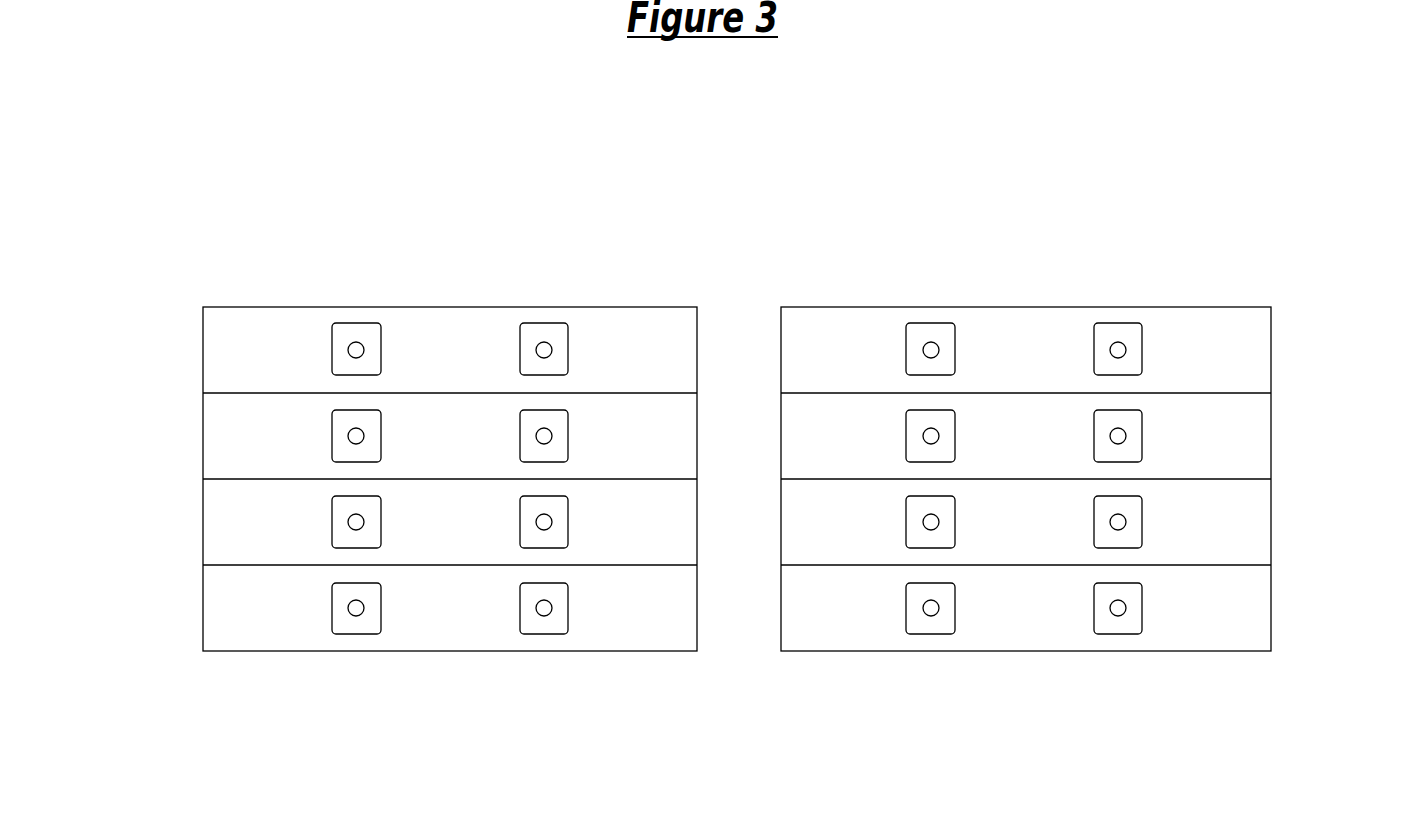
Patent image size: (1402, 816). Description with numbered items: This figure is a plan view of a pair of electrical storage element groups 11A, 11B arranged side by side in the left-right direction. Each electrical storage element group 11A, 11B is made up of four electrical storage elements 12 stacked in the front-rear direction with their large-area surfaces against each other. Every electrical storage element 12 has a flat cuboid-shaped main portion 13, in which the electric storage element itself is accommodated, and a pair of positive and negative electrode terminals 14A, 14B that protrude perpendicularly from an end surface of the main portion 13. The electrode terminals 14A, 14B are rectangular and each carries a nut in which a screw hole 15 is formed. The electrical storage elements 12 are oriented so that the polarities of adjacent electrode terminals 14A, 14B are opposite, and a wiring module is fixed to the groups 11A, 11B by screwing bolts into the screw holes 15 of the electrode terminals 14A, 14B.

The electrical storage element group 11A is at (477, 225).
The electrical storage element group 11B is at (1042, 222).
The electrical storage element 12 is at (203, 361).
The flat cuboid-shaped main portion 13 is at (453, 438).
The positive electrode terminal 14A is at (357, 332).
The negative electrode terminal 14B is at (338, 427).
The screw hole 15 is at (348, 350).